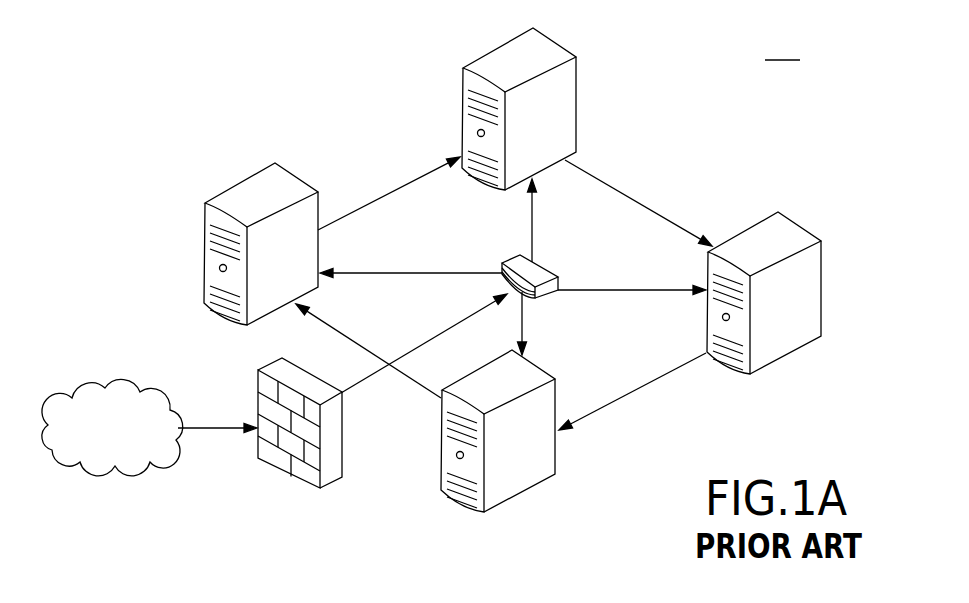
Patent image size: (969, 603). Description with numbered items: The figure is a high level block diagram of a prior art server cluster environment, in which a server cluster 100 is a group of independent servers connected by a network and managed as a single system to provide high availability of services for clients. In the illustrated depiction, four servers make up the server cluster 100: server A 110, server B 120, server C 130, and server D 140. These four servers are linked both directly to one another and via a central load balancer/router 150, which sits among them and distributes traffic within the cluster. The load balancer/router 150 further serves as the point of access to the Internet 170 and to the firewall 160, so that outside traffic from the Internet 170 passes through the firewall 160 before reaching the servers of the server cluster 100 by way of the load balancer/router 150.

The server cluster 100 is at (782, 48).
The server A 110 is at (250, 176).
The server B 120 is at (505, 45).
The server C 130 is at (784, 217).
The server D 140 is at (557, 458).
The load balancer/router 150 is at (549, 272).
The firewall 160 is at (342, 437).
The Internet 170 is at (152, 466).